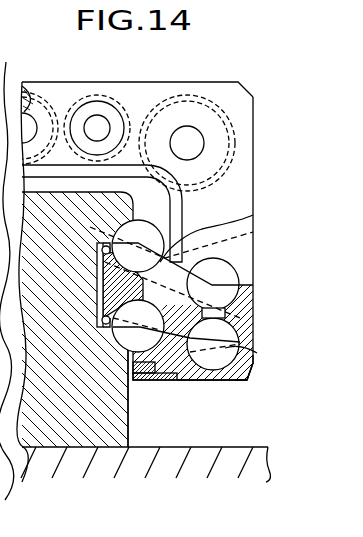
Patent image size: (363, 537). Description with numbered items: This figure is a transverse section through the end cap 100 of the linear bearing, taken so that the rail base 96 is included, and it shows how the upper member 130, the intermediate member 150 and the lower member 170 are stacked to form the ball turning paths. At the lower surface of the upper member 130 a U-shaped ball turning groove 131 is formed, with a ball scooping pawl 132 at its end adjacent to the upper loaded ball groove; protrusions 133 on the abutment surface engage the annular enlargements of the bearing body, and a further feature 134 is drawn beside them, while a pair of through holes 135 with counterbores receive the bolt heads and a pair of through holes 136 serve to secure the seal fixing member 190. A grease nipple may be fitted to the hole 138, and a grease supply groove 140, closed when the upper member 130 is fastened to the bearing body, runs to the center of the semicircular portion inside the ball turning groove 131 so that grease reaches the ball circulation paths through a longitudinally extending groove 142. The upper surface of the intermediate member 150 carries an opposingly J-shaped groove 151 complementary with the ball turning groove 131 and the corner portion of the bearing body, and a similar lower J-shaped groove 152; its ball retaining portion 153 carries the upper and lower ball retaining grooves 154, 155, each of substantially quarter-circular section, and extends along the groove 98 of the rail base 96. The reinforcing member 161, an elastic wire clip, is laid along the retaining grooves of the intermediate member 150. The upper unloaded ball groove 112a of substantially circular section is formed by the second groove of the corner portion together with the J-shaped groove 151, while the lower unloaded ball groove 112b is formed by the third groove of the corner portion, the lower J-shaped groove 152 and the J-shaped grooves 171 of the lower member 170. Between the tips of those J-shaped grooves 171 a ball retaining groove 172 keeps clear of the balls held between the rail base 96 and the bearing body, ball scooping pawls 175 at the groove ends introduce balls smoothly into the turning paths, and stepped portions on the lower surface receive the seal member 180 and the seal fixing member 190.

The end cap 100 is at (264, 92).
The upper member 130 is at (256, 128).
The hole 138 is at (37, 82).
The bore 134 is at (86, 95).
The protrusions 133 is at (108, 115).
The through holes 135 is at (107, 125).
The through holes 136 is at (190, 128).
The grease supply groove 140 is at (183, 200).
The longitudinally extending groove 142 is at (254, 206).
The ball turning groove 131 is at (255, 233).
The ball scooping pawl 132 is at (128, 229).
The reinforcing member 161 is at (97, 244).
The upper ball retaining groove 154 is at (102, 250).
The ball retaining portion 153 is at (99, 270).
The groove 98 is at (110, 278).
The lower ball retaining groove 155 is at (104, 319).
The J-shaped groove 151 is at (240, 279).
The upper unloaded ball groove 112a is at (230, 297).
The lower J-shaped groove 152 is at (226, 313).
The intermediate member 150 is at (256, 336).
The lower unloaded ball groove 112b is at (240, 348).
The ball scooping pawl 175 is at (124, 346).
The ball retaining groove 172 is at (127, 363).
The seal member 180 is at (146, 381).
The seal fixing member 190 is at (183, 381).
The J-shaped grooves 171 is at (238, 382).
The lower member 170 is at (262, 373).
The rail base 96 is at (128, 421).